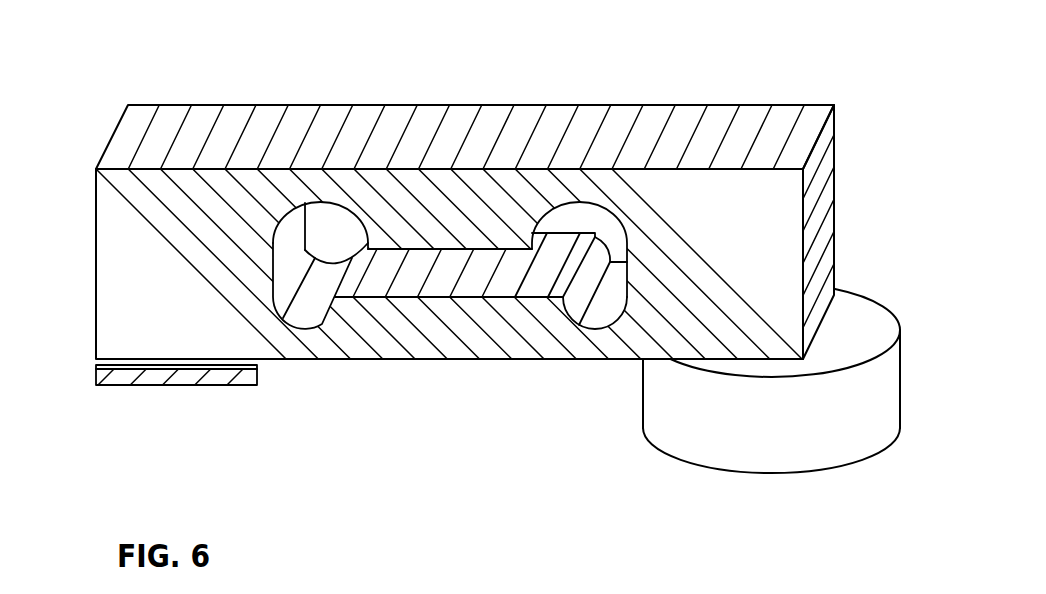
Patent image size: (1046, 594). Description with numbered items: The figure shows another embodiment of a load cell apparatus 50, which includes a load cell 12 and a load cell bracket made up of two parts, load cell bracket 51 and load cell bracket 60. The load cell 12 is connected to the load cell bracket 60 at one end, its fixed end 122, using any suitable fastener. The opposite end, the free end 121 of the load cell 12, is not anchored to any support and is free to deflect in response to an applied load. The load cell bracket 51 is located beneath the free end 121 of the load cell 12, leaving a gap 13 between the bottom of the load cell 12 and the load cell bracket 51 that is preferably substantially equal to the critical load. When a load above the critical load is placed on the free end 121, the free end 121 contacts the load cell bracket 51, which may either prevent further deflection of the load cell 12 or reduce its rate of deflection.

The load cell apparatus 50 is at (466, 297).
The load cell 12 is at (547, 345).
The free end 121 is at (130, 140).
The fixed end 122 is at (772, 123).
The gap 13 is at (262, 372).
The load cell bracket 51 is at (212, 378).
The load cell bracket 60 is at (778, 423).